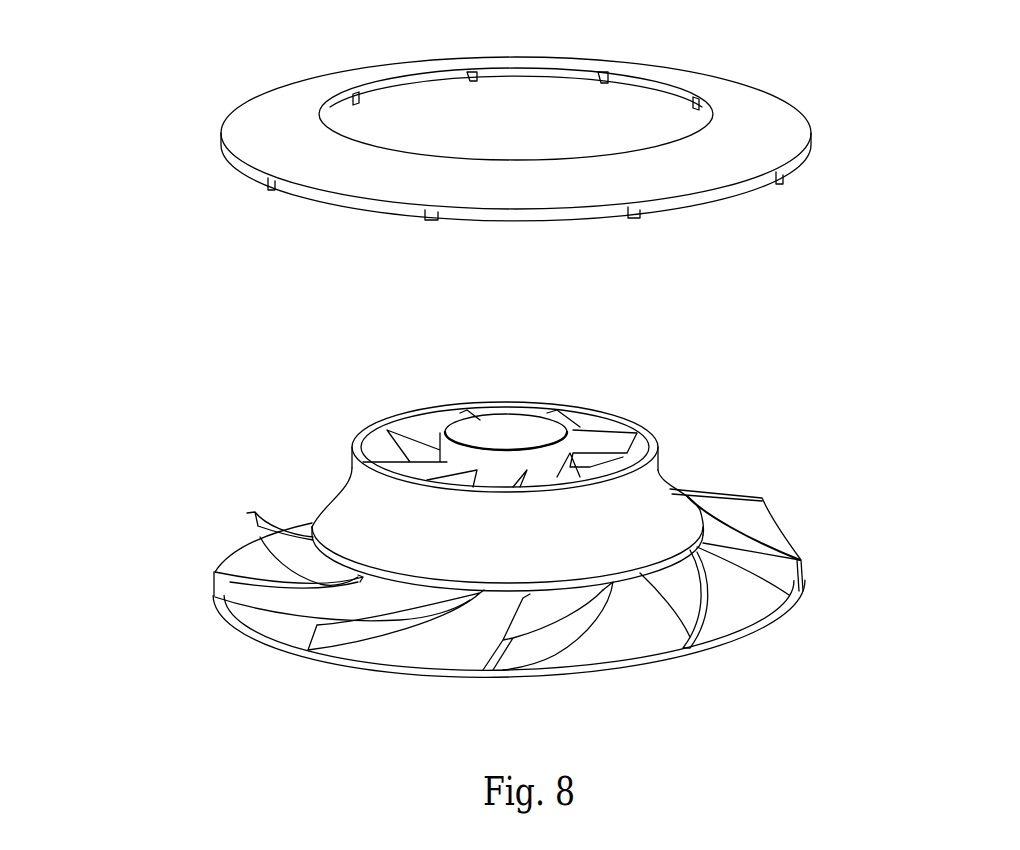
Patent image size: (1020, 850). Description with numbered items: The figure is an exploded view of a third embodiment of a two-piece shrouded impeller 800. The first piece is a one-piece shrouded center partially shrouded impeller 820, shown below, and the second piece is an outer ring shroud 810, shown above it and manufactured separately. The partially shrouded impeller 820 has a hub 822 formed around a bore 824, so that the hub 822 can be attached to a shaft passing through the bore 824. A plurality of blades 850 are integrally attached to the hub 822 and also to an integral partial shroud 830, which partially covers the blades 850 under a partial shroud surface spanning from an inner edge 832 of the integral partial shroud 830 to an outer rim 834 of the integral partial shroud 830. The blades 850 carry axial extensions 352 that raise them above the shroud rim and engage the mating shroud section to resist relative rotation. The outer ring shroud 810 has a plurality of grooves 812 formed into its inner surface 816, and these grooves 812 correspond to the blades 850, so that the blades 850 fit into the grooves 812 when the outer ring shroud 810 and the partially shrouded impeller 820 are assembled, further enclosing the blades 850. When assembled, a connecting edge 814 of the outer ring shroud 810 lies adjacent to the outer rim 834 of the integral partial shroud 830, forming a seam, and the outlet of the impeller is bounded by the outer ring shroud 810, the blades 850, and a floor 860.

The two-piece shrouded impeller 800 is at (160, 344).
The outer ring shroud 810 is at (748, 66).
The grooves 812 is at (430, 213).
The connecting edge 814 is at (535, 68).
The inner surface 816 is at (505, 78).
The one-piece shrouded center partially shrouded impeller 820 is at (268, 470).
The hub 822 is at (447, 432).
The bore 824 is at (472, 462).
The integral partial shroud 830 is at (660, 500).
The inner edge 832 is at (652, 437).
The outer rim 834 is at (692, 552).
The blades 850 is at (233, 588).
The blade axial extensions 352 is at (360, 576).
The floor 860 is at (676, 653).